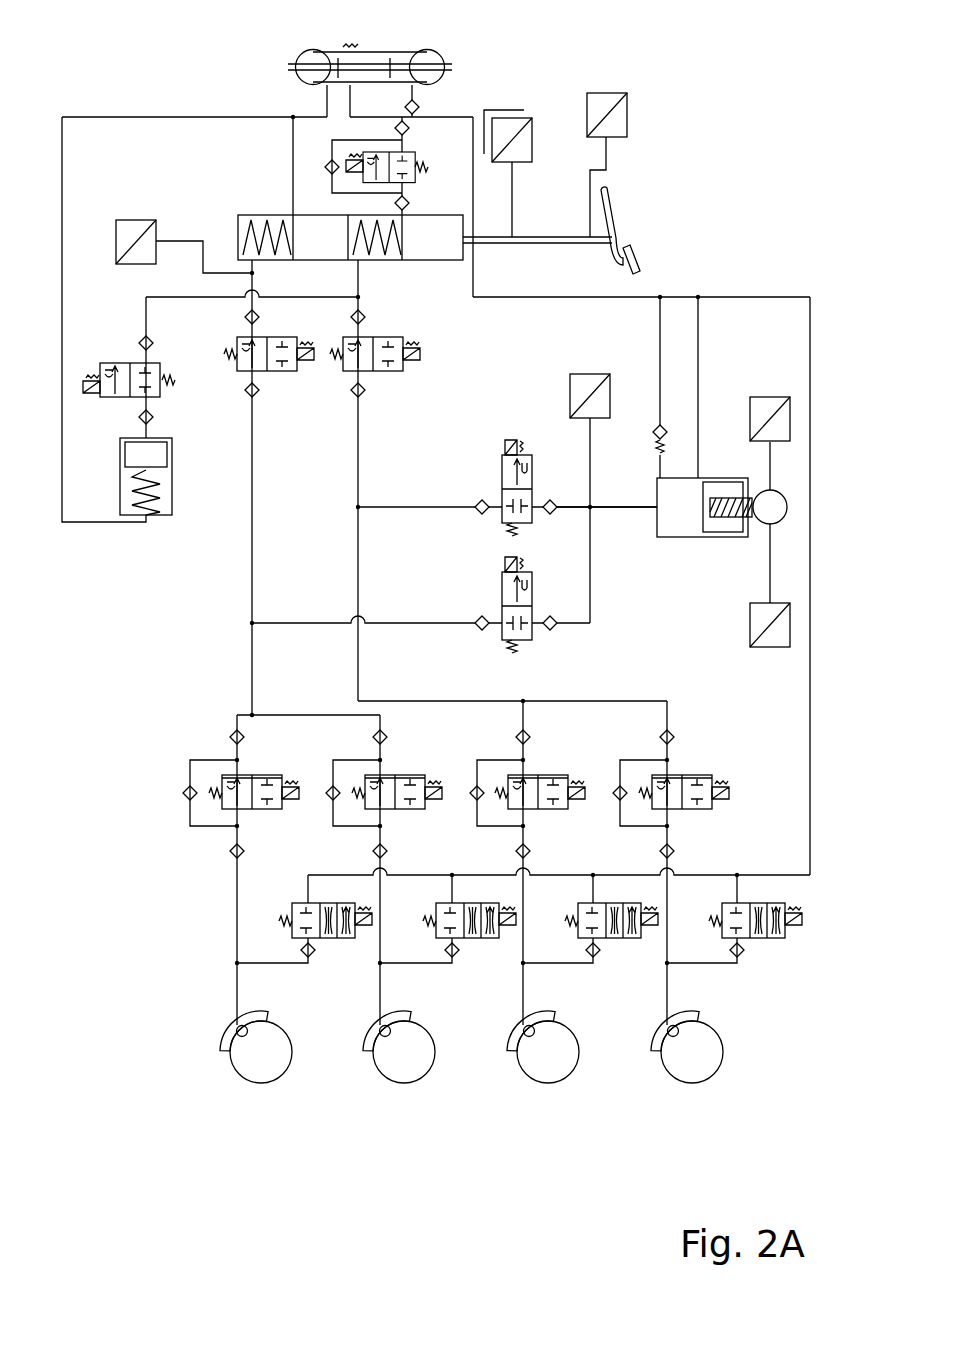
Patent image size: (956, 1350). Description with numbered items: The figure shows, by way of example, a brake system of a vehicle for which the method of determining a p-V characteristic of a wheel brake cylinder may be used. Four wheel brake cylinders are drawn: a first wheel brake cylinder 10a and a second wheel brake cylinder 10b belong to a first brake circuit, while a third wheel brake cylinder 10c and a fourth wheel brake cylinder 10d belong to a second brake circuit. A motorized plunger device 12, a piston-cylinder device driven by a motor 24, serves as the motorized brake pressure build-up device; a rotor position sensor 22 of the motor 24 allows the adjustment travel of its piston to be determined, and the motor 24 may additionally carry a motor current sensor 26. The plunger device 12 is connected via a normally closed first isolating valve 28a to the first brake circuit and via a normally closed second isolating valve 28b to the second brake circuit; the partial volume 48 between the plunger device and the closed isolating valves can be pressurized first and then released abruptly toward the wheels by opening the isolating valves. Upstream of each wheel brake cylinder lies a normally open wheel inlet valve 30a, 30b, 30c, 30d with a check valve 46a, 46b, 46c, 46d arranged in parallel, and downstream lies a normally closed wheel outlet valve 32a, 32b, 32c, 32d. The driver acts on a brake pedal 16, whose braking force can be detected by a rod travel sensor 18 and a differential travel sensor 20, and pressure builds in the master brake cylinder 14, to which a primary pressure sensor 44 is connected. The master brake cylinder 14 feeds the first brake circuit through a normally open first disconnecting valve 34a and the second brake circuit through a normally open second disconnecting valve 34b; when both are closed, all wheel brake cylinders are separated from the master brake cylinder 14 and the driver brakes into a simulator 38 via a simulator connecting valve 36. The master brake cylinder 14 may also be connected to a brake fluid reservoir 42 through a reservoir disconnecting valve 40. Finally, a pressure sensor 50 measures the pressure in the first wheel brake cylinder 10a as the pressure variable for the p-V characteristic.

The first wheel brake cylinder 10a is at (262, 1072).
The second wheel brake cylinder 10b is at (405, 1072).
The third wheel brake cylinder 10c is at (549, 1072).
The fourth wheel brake cylinder 10d is at (693, 1072).
The motorized plunger device 12 is at (705, 552).
The master brake cylinder 14 is at (398, 268).
The brake pedal 16 is at (615, 218).
The rod travel sensor 18 is at (606, 93).
The differential travel sensor 20 is at (512, 110).
The rotor position sensor 22 is at (771, 395).
The motor 24 is at (778, 529).
The motor current sensor 26 is at (771, 650).
The first isolating valve 28a is at (501, 598).
The second isolating valve 28b is at (501, 482).
The first wheel inlet valve 30a is at (259, 774).
The wheel inlet valve 30b is at (402, 774).
The wheel inlet valve 30c is at (545, 774).
The wheel inlet valve 30d is at (689, 774).
The first wheel outlet valve 32a is at (331, 940).
The wheel outlet valve 32b is at (475, 940).
The wheel outlet valve 32c is at (616, 940).
The wheel outlet valve 32d is at (760, 940).
The first disconnecting valve 34a is at (273, 372).
The second disconnecting valve 34b is at (379, 372).
The simulator connecting valve 36 is at (123, 363).
The simulator 38 is at (174, 470).
The reservoir disconnecting valve 40 is at (415, 175).
The brake fluid reservoir 42 is at (373, 62).
The primary pressure sensor 44 is at (137, 220).
The first check valve 46a is at (186, 801).
The check valve 46b is at (329, 801).
The check valve 46c is at (472, 801).
The check valve 46d is at (615, 801).
The partial volume 48 is at (604, 522).
The pressure sensor 50 is at (586, 372).